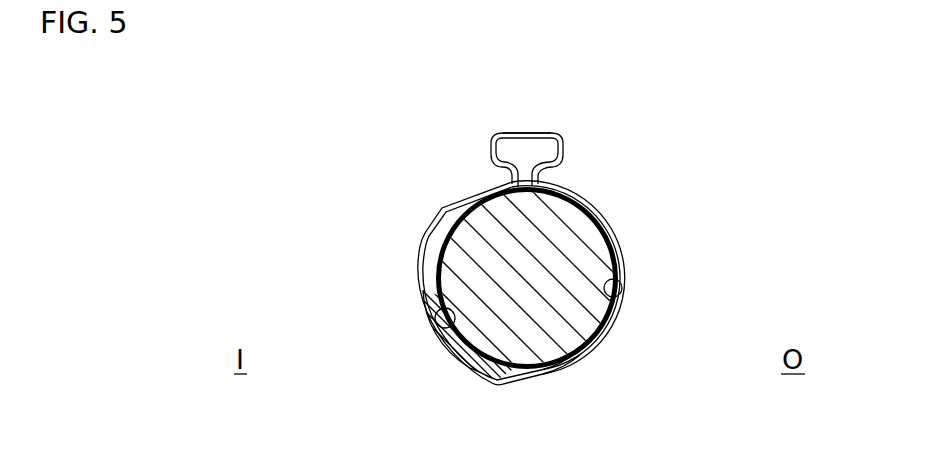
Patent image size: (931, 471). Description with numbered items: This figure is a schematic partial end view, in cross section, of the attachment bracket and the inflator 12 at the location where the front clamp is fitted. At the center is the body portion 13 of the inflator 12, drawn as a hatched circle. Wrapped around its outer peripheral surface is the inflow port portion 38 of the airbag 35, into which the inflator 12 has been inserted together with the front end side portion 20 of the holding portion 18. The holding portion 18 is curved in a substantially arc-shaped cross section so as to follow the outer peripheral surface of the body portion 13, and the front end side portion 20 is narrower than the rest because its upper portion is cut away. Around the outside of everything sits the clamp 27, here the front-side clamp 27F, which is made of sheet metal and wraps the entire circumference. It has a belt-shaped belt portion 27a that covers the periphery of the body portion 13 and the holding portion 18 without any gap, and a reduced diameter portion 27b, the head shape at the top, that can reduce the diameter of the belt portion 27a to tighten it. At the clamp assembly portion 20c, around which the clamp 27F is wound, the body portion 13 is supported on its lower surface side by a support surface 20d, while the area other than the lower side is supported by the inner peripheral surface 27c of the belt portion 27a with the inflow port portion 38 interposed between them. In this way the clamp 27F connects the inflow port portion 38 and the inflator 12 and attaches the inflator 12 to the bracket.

The body portion 13 is at (549, 280).
The inflator 12 is at (592, 233).
The inflow port portion 38 is at (632, 259).
The airbag 35 is at (582, 197).
The clamp 27 is at (578, 246).
The clamp 27F is at (563, 131).
The belt portion 27a is at (582, 352).
The reduced diameter portion 27b is at (527, 135).
The inner peripheral surface 27c is at (623, 285).
The clamp assembly portion 20c is at (395, 330).
The front end side portion 20 is at (395, 330).
The holding portion 18 is at (422, 300).
The support surface 20d is at (440, 343).